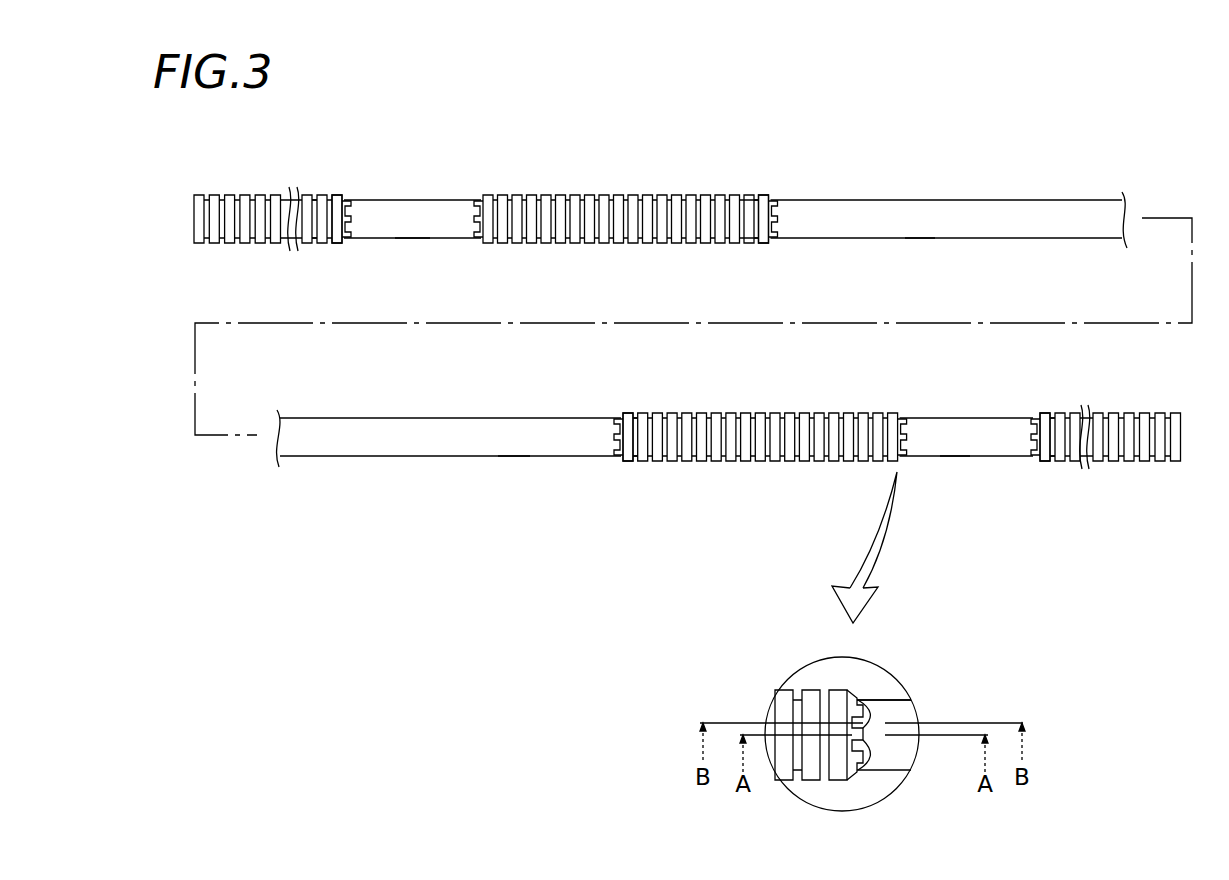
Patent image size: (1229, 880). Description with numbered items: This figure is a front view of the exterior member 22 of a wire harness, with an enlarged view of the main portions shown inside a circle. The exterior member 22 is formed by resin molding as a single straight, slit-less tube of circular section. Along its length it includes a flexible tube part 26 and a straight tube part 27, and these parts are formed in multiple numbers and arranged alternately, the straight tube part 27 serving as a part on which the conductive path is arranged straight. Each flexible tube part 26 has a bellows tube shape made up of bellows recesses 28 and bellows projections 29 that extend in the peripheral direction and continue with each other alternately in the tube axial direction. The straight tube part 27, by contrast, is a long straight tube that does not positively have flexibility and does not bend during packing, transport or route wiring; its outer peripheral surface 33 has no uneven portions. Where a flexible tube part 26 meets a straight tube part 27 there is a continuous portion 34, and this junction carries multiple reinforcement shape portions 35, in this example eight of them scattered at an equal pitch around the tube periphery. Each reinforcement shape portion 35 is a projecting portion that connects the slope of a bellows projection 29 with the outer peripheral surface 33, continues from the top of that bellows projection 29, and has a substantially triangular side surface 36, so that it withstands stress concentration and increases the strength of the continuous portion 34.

The exterior member 22 is at (901, 139).
The flexible tube part 26 is at (278, 194).
The straight tube part 27 is at (432, 199).
The bellows recess 28 is at (337, 244).
The bellows projection 29 is at (345, 244).
The outer peripheral surface 33 is at (412, 239).
The continuous portion 34 is at (867, 710).
The reinforcement shape portion 35 is at (345, 198).
The substantially triangular side surface 36 is at (808, 776).